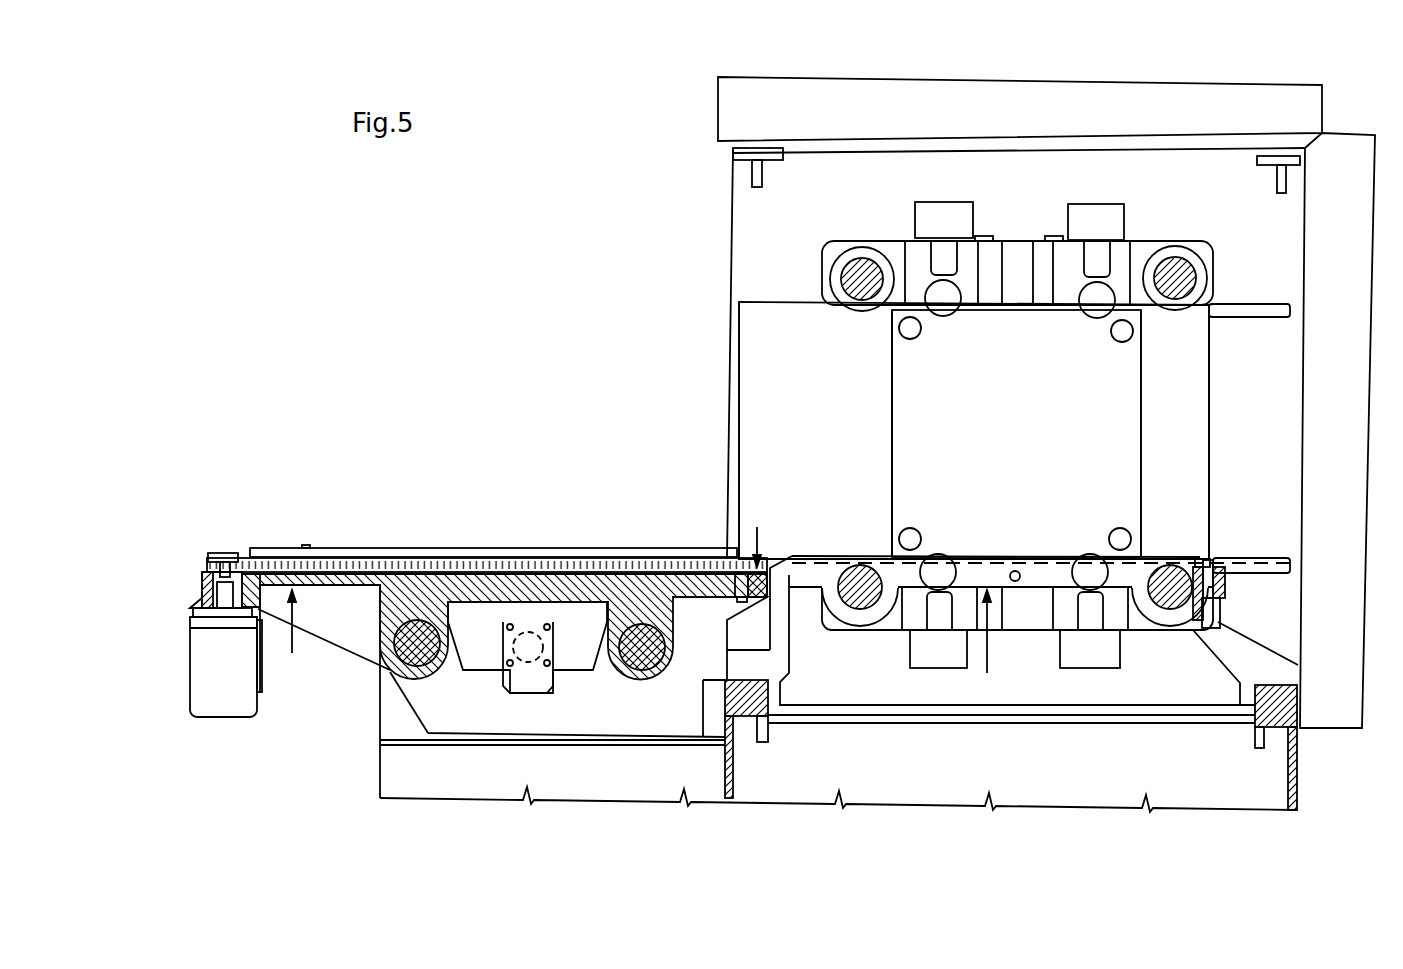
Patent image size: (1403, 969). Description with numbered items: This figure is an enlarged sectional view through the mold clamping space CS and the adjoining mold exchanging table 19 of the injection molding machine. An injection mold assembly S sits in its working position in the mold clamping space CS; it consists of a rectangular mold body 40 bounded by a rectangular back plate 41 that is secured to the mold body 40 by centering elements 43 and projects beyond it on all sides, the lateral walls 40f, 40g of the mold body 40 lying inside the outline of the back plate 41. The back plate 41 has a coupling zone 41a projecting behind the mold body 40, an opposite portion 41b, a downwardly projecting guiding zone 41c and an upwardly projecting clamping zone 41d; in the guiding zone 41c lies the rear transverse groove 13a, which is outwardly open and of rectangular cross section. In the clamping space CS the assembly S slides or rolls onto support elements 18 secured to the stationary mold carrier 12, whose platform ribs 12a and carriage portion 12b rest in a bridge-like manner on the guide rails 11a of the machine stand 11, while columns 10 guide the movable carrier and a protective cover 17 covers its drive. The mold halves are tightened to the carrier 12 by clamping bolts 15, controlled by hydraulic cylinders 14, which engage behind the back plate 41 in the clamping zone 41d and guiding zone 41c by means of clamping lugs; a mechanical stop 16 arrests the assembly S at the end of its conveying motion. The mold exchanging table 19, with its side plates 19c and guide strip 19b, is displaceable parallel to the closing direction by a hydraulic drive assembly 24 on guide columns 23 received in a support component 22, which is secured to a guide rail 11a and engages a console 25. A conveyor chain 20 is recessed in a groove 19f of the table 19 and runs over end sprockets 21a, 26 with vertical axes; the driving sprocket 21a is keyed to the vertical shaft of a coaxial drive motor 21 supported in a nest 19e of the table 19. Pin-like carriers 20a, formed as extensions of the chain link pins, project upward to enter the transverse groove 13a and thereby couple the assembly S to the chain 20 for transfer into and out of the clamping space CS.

The columns 10 is at (860, 265).
The machine stand 11 is at (1245, 775).
The guide rails 11a is at (750, 703).
The stationary mold carrier 12 is at (818, 260).
The lower carriage housing 12a is at (1277, 675).
The upper carriage 12b is at (750, 268).
The rear transverse groove 13a is at (1210, 555).
The hydraulic cylinders 14 is at (932, 221).
The clamping bolts 15 is at (1092, 295).
The mechanical stop 16 is at (1207, 582).
The protective cover 17 is at (1287, 115).
The support elements 18 is at (981, 648).
The mold exchanging table 19 is at (324, 639).
The guide strip 19b is at (522, 557).
The side plate 19c is at (353, 633).
The nest 19e is at (248, 590).
The grooves 19f is at (595, 578).
The conveyor chain 20 is at (430, 555).
The carriers 20a is at (308, 555).
The drive motor 21 is at (223, 690).
The driving sprocket 21a is at (212, 560).
The support component 22 is at (428, 702).
The guide columns 23 is at (617, 660).
The hydraulic drive assembly 24 is at (503, 663).
The console 25 is at (490, 768).
The end sprocket 26 is at (770, 531).
The mold body 40 is at (1102, 385).
The holder left wall 40f is at (891, 445).
The holder right wall 40g is at (1141, 476).
The back plate 41 is at (735, 374).
The coupling zone 41a is at (828, 413).
The frame right portion 41b is at (1157, 453).
The guiding zone 41c is at (923, 555).
The clamping zone 41d is at (992, 310).
The centering elements 43 is at (1113, 339).
The injection mold assembly S is at (1006, 437).
The mold clamping space CS is at (1227, 430).